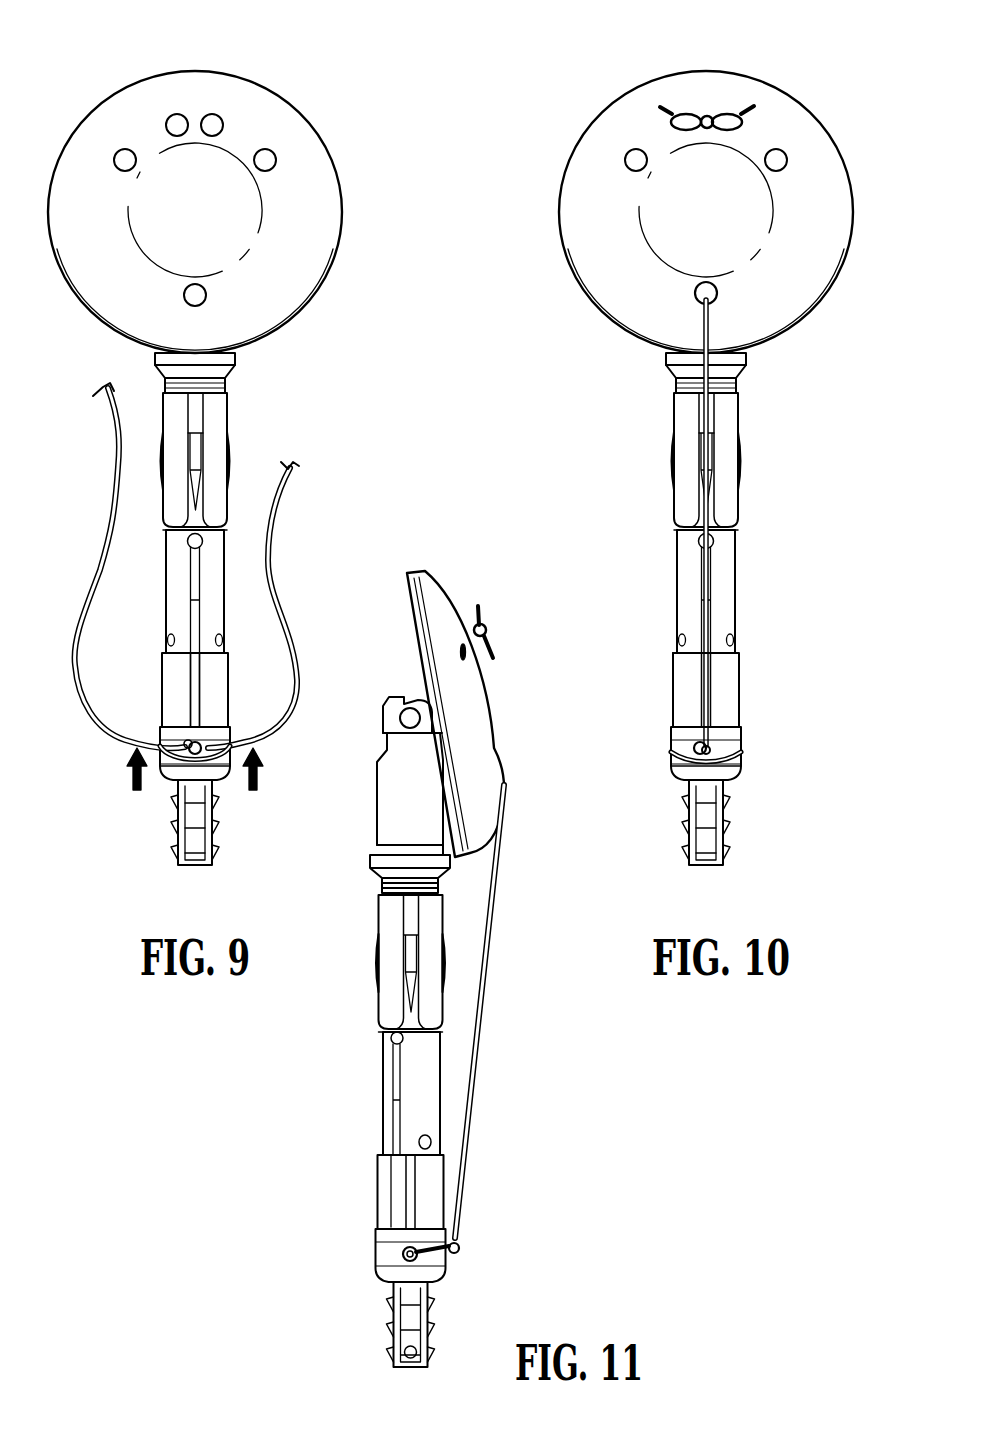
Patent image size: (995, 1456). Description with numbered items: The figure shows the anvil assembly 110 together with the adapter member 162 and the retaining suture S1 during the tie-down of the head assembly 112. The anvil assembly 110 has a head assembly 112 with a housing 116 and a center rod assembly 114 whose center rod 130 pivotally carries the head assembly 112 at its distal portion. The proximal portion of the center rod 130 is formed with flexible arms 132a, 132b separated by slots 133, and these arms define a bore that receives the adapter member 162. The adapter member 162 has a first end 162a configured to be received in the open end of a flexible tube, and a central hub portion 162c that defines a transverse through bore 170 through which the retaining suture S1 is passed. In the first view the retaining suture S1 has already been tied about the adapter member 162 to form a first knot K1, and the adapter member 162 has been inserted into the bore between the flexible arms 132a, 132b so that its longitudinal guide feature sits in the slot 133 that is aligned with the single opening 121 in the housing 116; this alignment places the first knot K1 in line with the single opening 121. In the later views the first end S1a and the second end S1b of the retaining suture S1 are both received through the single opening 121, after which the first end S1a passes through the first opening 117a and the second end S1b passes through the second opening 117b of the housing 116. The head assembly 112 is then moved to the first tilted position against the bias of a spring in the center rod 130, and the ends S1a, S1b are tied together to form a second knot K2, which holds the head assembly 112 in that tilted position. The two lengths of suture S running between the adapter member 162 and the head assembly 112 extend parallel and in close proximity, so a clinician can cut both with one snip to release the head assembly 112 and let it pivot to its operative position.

In FIG. 11, the anvil assembly 110 is at (401, 937).
In FIG. 11, the head assembly 112 is at (477, 682).
In FIG. 11, the center rod assembly 114 is at (366, 1059).
In FIG. 9, the housing 116 is at (195, 212).
In FIG. 10, the housing 116 is at (706, 212).
In FIG. 11, the housing 116 is at (476, 718).
In FIG. 9, the first opening 117a is at (212, 114).
In FIG. 10, the first opening 117a is at (742, 118).
In FIG. 9, the second opening 117b is at (172, 116).
In FIG. 10, the second opening 117b is at (668, 118).
In FIG. 9, the single opening 121 is at (199, 295).
In FIG. 10, the single opening 121 is at (716, 290).
In FIG. 9, the center rod 130 is at (215, 412).
In FIG. 10, the center rod 130 is at (722, 515).
In FIG. 11, the center rod 130 is at (402, 975).
In FIG. 9, the flexible arm 132a is at (170, 688).
In FIG. 10, the flexible arm 132a is at (732, 685).
In FIG. 10, the flexible arm 132b is at (690, 680).
In FIG. 11, the flexible arm 132b is at (430, 1190).
In FIG. 9, the slot 133 is at (197, 690).
In FIG. 9, the adapter member 162 is at (160, 745).
In FIG. 10, the adapter member 162 is at (756, 765).
In FIG. 11, the adapter member 162 is at (366, 1290).
In FIG. 9, the first end 162a is at (176, 838).
In FIG. 9, the central hub portion 162c is at (215, 775).
In FIG. 10, the central hub portion 162c is at (682, 768).
In FIG. 11, the central hub portion 162c is at (437, 1265).
In FIG. 10, the transverse through bore 170 is at (744, 752).
In FIG. 11, the transverse through bore 170 is at (403, 1255).
In FIG. 10, the suture S is at (712, 468).
In FIG. 11, the retaining suture S1 is at (476, 1070).
In FIG. 9, the first end S1a is at (290, 480).
In FIG. 10, the first end S1a is at (736, 112).
In FIG. 11, the first end S1a is at (478, 604).
In FIG. 9, the second end S1b is at (118, 467).
In FIG. 10, the second end S1b is at (670, 112).
In FIG. 11, the second end S1b is at (498, 654).
In FIG. 9, the first knot K1 is at (183, 762).
In FIG. 10, the first knot K1 is at (724, 738).
In FIG. 11, the first knot K1 is at (472, 1247).
In FIG. 10, the second knot K2 is at (697, 103).
In FIG. 11, the second knot K2 is at (497, 612).